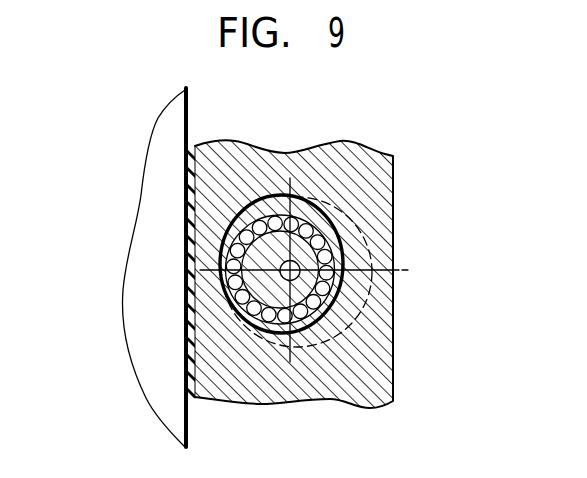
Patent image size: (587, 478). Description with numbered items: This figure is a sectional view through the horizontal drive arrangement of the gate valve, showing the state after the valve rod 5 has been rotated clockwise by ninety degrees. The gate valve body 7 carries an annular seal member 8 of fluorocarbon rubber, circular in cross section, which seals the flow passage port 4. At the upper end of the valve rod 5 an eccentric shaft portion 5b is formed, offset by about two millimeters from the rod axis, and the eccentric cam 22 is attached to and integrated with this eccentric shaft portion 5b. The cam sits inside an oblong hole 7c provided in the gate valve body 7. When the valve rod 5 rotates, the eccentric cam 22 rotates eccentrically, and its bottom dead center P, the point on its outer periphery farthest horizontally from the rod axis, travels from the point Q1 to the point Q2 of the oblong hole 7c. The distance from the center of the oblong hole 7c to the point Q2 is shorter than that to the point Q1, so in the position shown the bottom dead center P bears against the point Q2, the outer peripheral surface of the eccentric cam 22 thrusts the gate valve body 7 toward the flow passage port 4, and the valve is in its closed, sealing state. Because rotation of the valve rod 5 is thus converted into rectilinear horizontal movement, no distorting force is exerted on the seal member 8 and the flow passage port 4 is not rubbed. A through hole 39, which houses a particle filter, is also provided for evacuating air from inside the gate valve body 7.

The flow passage port 4 is at (142, 360).
The valve rod 5 is at (306, 288).
The eccentric shaft portion 5b is at (303, 225).
The gate valve body 7 is at (259, 180).
The oblong hole 7c is at (333, 221).
The seal member 8 is at (195, 174).
The eccentric cam 22 is at (262, 322).
The through hole 39 is at (238, 229).
The bottom dead center P is at (220, 268).
The point Q1 is at (274, 190).
The point Q2 is at (343, 272).